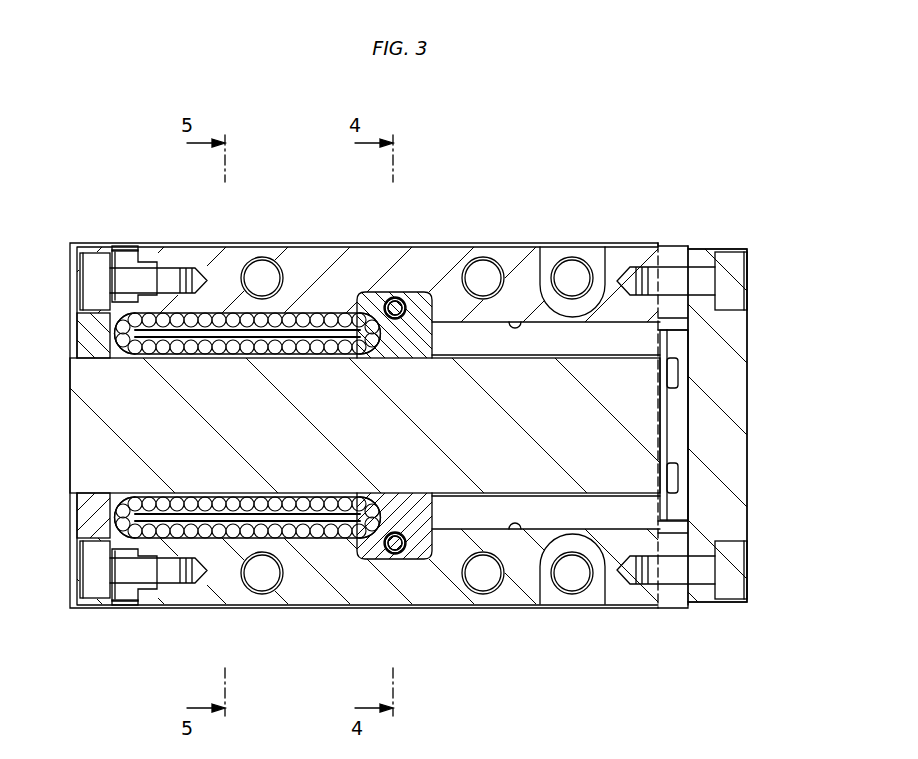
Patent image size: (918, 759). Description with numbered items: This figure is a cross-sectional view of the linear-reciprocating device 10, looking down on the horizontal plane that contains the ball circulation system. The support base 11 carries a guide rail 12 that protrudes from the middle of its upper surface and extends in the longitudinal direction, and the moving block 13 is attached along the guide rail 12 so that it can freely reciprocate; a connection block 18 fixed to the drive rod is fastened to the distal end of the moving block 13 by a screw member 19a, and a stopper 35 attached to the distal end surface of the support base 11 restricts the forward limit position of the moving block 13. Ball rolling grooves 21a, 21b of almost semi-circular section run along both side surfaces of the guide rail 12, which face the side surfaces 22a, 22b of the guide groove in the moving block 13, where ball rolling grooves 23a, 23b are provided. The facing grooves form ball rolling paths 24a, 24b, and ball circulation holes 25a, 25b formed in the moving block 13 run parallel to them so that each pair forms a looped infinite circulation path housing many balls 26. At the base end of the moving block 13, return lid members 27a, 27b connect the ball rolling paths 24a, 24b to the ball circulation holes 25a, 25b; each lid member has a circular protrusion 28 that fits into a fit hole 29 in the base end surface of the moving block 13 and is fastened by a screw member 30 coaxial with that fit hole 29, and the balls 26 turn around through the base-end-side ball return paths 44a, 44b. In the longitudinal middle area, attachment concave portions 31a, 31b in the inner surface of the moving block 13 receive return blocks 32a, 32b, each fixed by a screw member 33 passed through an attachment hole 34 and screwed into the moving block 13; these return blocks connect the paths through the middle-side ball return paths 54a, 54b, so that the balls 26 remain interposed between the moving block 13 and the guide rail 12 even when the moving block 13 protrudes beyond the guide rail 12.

The linear-reciprocating device 10 is at (578, 198).
The support base 11 is at (575, 608).
The guide rail 12 is at (590, 436).
The moving block 13 is at (660, 246).
The connection block 18 is at (718, 470).
The screw member 19a is at (730, 280).
The ball rolling groove 21a is at (600, 352).
The ball rolling groove 21b is at (600, 500).
The side surface of guide groove 22a is at (515, 316).
The side surface of guide groove 22b is at (515, 535).
The ball rolling groove 23a is at (285, 313).
The ball rolling groove 23b is at (285, 538).
The ball rolling path 24a is at (240, 258).
The ball rolling path 24b is at (240, 593).
The ball circulation hole 25a is at (300, 330).
The ball circulation hole 25b is at (300, 521).
The balls 26 is at (160, 353).
The return lid member 27a is at (85, 330).
The return lid member 27b is at (85, 521).
The circular protrusion 28 is at (149, 250).
The fit hole 29 is at (123, 247).
The screw member 30 is at (98, 283).
The attachment concave portion 31a is at (425, 320).
The attachment concave portion 31b is at (425, 531).
The return block 32a is at (404, 304).
The return block 32b is at (404, 547).
The screw member 33 is at (395, 300).
The attachment hole 34 is at (389, 299).
The stopper 35 is at (668, 400).
The base-end-side ball return path 44a is at (112, 338).
The base-end-side ball return path 44b is at (112, 513).
The middle-side ball return path 54a is at (375, 312).
The middle-side ball return path 54b is at (375, 539).